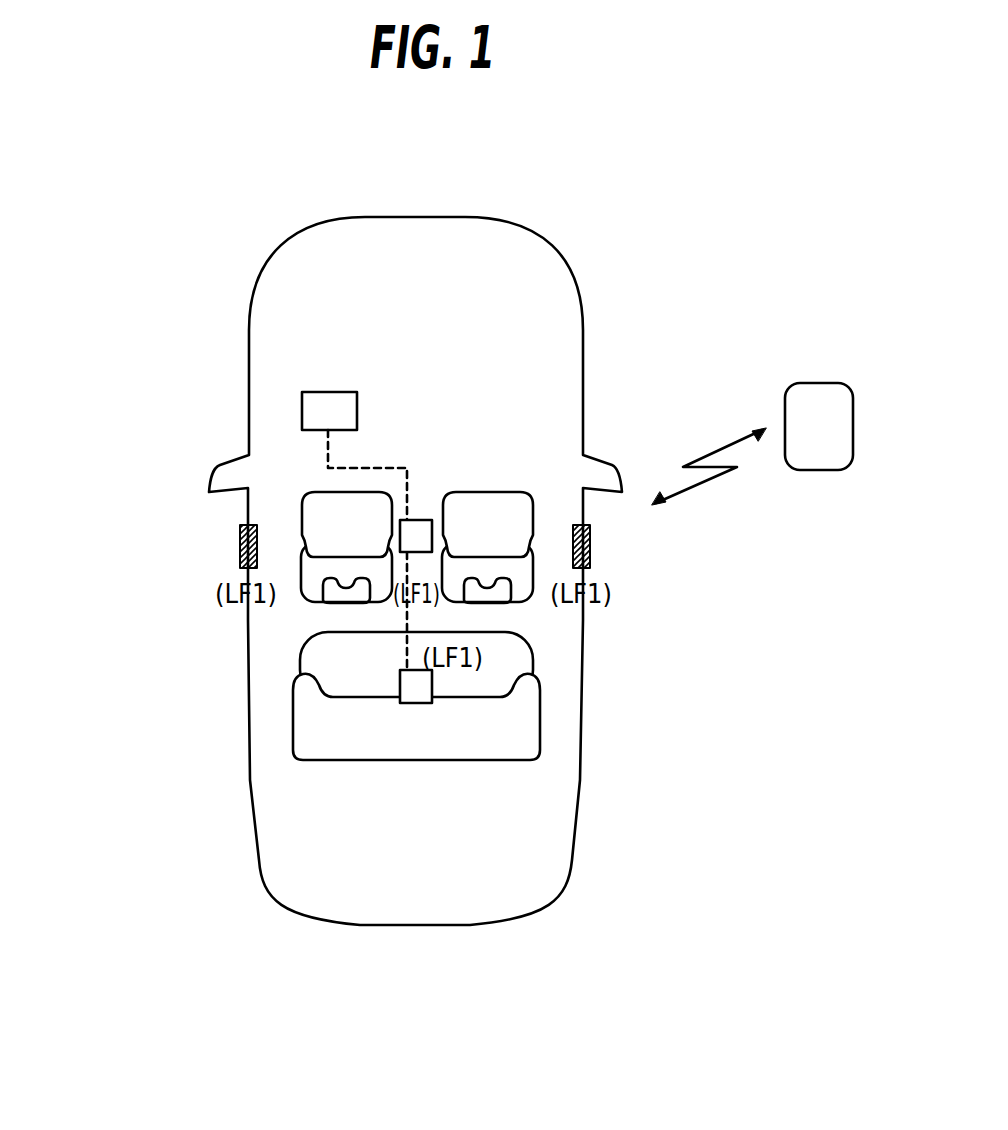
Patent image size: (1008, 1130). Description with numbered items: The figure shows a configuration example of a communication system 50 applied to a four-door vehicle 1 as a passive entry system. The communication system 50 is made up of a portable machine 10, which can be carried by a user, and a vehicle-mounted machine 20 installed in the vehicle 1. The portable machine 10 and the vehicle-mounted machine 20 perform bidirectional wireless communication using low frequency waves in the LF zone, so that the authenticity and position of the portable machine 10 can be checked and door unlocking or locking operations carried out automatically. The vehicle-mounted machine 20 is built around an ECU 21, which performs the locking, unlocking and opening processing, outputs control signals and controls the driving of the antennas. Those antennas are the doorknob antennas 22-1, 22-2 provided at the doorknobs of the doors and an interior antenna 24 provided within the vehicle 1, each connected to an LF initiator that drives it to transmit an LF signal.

The vehicle 1 is at (248, 302).
The portable machine 10 is at (818, 470).
The vehicle-mounted machine 20 is at (154, 437).
The ECU 21 is at (302, 411).
The doorknob antenna 22-1 is at (590, 547).
The doorknob antenna 22-2 is at (240, 548).
The interior antenna 24 is at (415, 518).
The communication system 50 is at (672, 302).